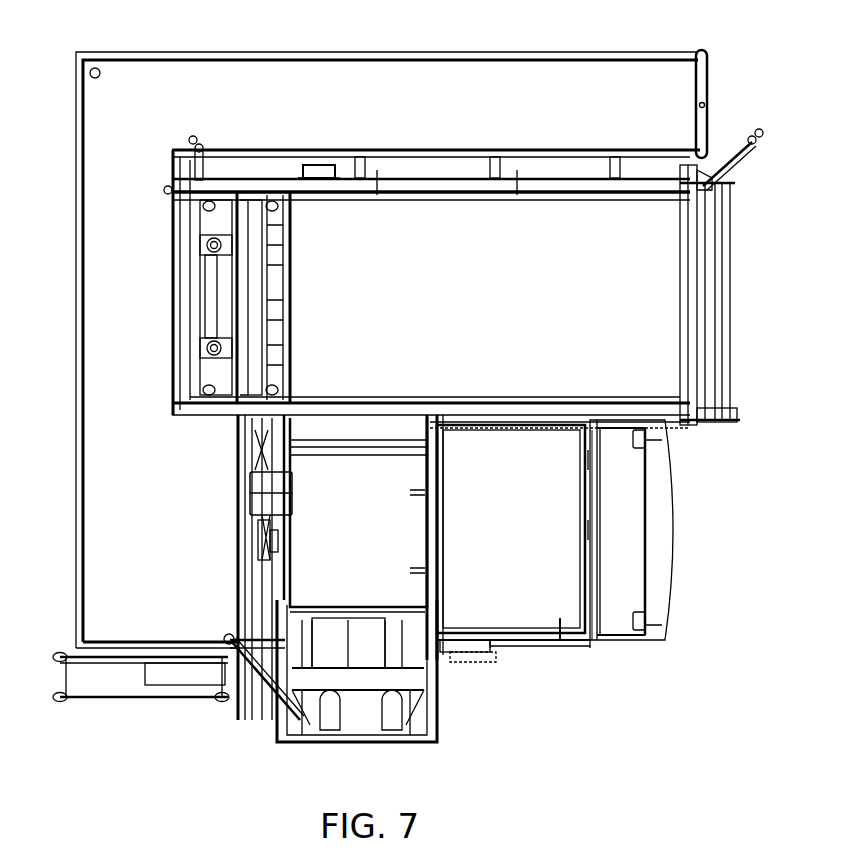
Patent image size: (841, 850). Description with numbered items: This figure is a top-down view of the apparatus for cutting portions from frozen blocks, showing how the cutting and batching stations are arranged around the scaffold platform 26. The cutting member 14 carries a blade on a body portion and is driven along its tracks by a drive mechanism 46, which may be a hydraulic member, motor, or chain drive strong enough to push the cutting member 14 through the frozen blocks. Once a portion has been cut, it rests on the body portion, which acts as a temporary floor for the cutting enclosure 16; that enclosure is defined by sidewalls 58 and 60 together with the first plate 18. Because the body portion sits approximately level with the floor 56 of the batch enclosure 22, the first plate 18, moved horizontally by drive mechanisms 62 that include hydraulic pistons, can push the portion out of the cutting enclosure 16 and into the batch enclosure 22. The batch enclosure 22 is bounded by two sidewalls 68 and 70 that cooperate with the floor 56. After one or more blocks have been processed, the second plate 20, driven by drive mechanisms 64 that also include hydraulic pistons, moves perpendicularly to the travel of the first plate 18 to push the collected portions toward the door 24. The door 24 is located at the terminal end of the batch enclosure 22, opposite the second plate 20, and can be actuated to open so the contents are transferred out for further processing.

The cutting member 14 is at (525, 615).
The cutting enclosure 16 is at (315, 487).
The first plate 18 is at (440, 650).
The second plate 20 is at (290, 258).
The batch enclosure 22 is at (452, 145).
The door 24 is at (722, 208).
The scaffold platform 26 is at (225, 90).
The drive mechanism 46 is at (648, 428).
The floor 56 is at (655, 302).
The sidewall 58 is at (448, 530).
The sidewall 60 is at (265, 532).
The drive mechanisms 62 is at (382, 744).
The drive mechanisms 64 is at (185, 245).
The sidewall 68 is at (535, 412).
The sidewall 70 is at (612, 185).